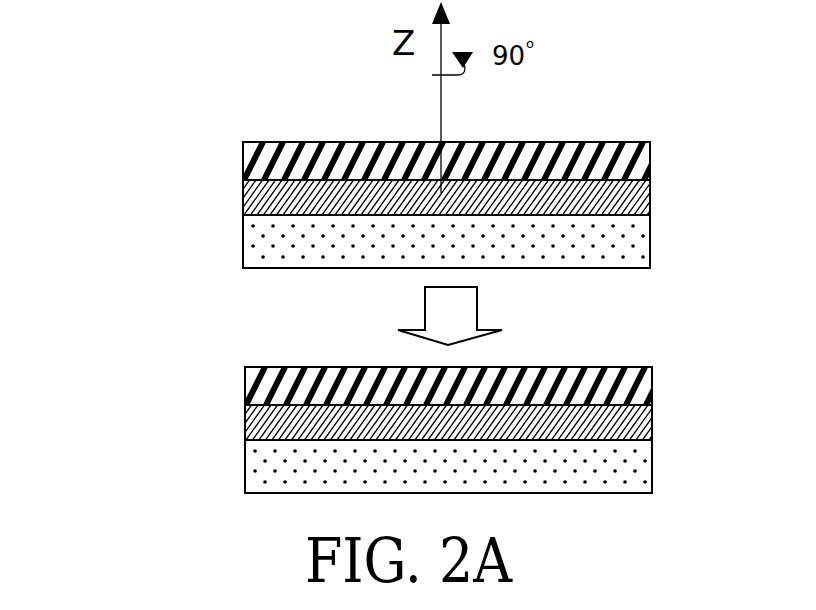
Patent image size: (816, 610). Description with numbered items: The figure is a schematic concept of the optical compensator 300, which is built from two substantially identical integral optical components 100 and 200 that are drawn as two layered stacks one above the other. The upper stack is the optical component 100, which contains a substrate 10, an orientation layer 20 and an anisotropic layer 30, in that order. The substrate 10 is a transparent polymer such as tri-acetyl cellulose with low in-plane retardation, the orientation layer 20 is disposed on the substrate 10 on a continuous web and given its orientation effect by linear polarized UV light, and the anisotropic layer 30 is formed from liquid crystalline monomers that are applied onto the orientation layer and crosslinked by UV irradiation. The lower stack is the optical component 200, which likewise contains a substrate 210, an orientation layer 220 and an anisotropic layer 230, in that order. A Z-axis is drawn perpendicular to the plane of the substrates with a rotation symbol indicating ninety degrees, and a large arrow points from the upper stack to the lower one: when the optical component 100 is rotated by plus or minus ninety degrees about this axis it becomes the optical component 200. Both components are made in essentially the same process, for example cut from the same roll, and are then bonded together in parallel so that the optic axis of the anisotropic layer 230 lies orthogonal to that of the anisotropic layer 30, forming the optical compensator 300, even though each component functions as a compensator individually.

The substrate 10 is at (650, 258).
The orientation layer 20 is at (650, 200).
The anisotropic layer 30 is at (650, 165).
The optical component 100 is at (228, 142).
The optical component 200 is at (230, 367).
The substrate 210 is at (653, 483).
The orientation layer 220 is at (653, 428).
The anisotropic layer 230 is at (653, 393).
The optical compensator 300 is at (140, 223).